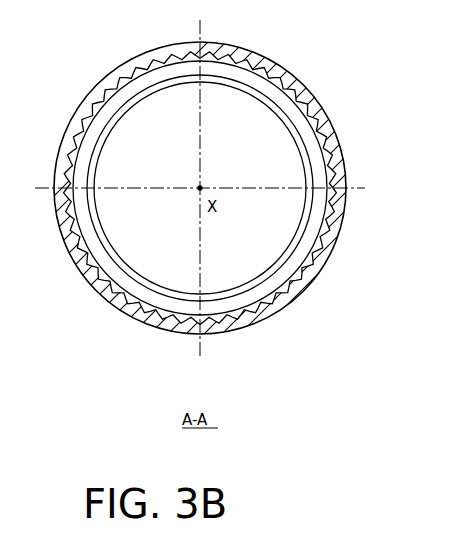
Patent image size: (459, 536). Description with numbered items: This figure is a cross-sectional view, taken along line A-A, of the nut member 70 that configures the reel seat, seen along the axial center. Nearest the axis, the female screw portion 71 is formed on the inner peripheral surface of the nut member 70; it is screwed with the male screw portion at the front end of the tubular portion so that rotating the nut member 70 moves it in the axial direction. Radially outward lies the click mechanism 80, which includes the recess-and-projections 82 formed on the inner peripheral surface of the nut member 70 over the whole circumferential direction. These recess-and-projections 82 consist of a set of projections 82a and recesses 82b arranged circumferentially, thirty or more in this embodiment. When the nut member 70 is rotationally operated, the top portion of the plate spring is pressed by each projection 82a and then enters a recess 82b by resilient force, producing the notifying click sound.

The nut member 70 is at (255, 53).
The female screw portion 71 is at (162, 75).
The click mechanism 80 is at (327, 102).
The recess-and-projections 82 is at (255, 188).
The projections 82a is at (325, 245).
The recesses 82b is at (332, 235).